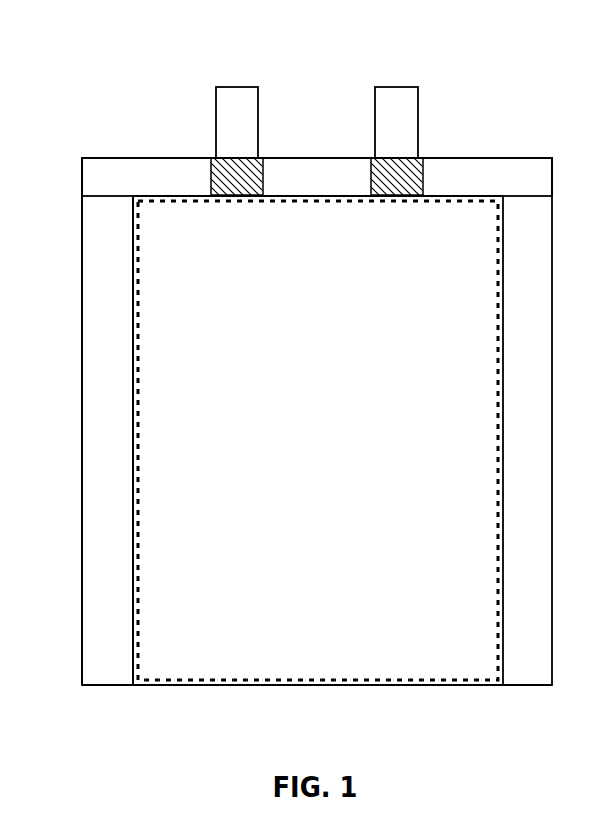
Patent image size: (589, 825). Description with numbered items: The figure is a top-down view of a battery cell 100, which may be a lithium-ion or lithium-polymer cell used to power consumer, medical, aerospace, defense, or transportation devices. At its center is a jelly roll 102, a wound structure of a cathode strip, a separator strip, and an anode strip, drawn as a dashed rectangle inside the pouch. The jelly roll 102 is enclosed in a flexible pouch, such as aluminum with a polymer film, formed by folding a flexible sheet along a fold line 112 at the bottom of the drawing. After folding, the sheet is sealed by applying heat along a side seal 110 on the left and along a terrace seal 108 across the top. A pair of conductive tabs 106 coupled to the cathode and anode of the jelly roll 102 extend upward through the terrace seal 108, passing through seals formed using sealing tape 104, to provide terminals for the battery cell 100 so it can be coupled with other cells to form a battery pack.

The battery cell 100 is at (83, 150).
The jelly roll 102 is at (318, 440).
The sealing tape 104 is at (244, 198).
The conductive tabs 106 is at (375, 87).
The terrace seal 108 is at (452, 158).
The side seal 110 is at (81, 413).
The fold line 112 is at (385, 686).